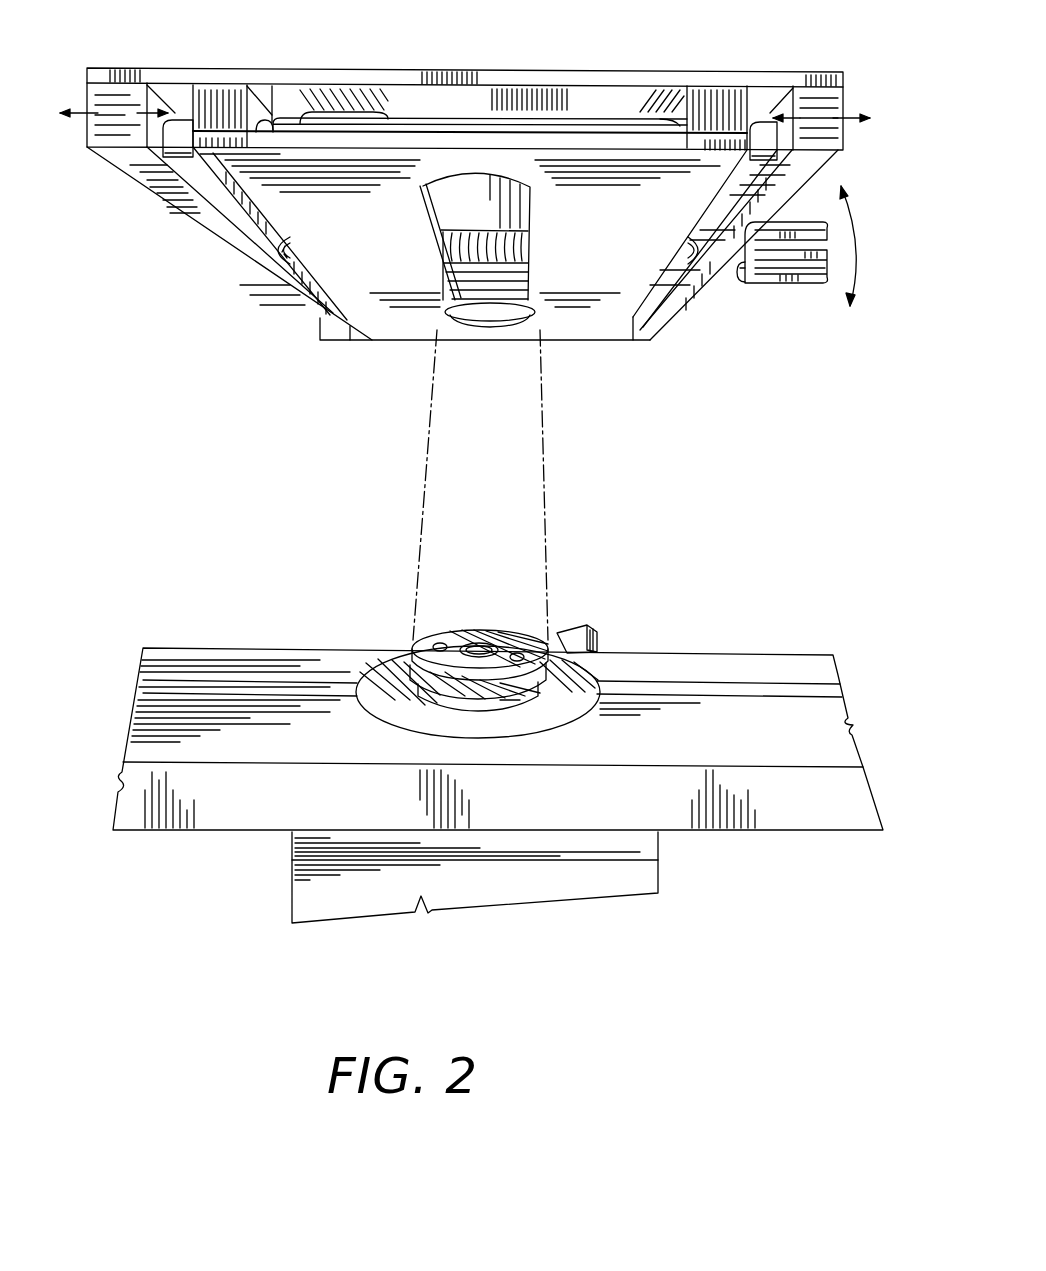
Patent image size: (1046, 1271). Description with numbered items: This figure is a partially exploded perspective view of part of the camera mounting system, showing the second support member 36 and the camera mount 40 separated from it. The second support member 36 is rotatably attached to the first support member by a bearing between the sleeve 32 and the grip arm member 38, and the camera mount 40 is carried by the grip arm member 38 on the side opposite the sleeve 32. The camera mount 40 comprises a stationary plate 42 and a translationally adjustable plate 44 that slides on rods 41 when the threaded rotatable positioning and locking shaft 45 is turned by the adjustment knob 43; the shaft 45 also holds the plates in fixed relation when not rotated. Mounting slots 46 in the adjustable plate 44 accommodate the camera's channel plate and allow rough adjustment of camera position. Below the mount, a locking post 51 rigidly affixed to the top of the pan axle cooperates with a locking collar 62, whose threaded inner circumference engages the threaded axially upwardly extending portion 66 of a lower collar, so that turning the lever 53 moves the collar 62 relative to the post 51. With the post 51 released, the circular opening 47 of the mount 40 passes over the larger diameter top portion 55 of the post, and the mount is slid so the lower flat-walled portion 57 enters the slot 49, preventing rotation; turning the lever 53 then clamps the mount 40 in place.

The sleeve 32 is at (643, 868).
The second support member 36 is at (222, 642).
The grip arm member 38 is at (767, 681).
The camera mount 40 is at (676, 375).
The rods 41 is at (272, 121).
The stationary plate 42 is at (597, 298).
The adjustment knob 43 is at (767, 285).
The translationally adjustable plate 44 is at (178, 119).
The threaded rotatable positioning and locking shaft 45 is at (283, 262).
The mounting slots 46 is at (390, 114).
The circular opening 47 is at (465, 322).
The slot 49 is at (443, 318).
The locking post 51 is at (437, 632).
The lever 53 is at (578, 630).
The larger diameter top portion 55 is at (427, 656).
The lower flat-walled portion 57 is at (549, 690).
The locking collar 62 is at (383, 683).
The axially upwardly extending portion 66 is at (604, 694).